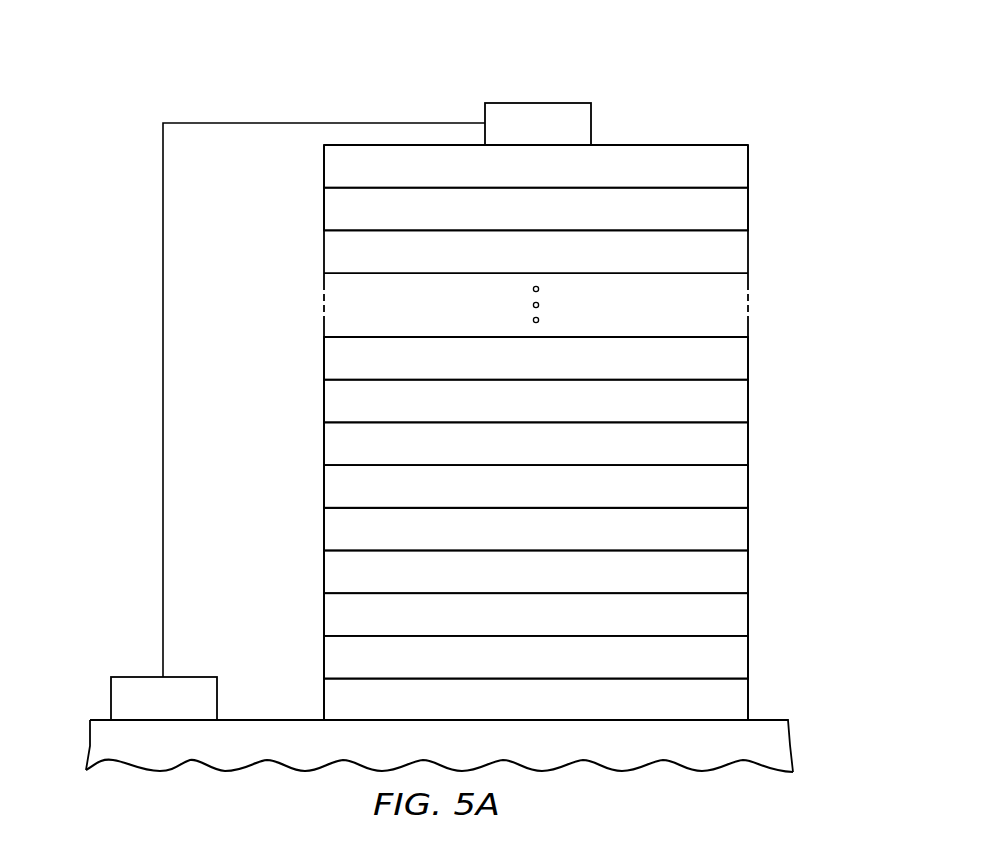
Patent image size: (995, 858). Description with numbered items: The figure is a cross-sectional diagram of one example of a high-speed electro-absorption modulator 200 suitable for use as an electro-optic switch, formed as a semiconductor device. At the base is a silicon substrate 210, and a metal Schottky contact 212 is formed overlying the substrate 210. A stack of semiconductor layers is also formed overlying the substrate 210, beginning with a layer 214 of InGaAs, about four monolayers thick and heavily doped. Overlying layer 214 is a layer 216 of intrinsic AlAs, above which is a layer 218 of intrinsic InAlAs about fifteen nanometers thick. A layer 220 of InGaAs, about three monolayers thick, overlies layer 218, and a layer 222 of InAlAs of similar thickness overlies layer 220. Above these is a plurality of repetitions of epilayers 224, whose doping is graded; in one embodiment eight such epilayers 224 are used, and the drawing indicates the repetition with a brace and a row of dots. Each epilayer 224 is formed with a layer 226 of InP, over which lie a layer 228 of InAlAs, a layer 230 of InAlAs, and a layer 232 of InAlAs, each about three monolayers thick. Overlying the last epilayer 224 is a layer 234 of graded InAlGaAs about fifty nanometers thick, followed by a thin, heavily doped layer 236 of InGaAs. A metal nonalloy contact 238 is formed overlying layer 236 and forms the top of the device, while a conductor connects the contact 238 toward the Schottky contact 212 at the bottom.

The modulator 200 is at (692, 110).
The silicon substrate 210 is at (790, 748).
The metal Schottky contact 212 is at (111, 698).
The layer of InGaAs 214 is at (749, 702).
The layer of intrinsic AlAs 216 is at (749, 659).
The layer of intrinsic InAlAs 218 is at (749, 616).
The layer of InGaAs 220 is at (749, 573).
The layer of InAlAs 222 is at (749, 531).
The epilayer 224 is at (749, 253).
The layer of InP 226 is at (749, 488).
The layer of InAlAs 228 is at (749, 445).
The layer of InAlAs 230 is at (749, 403).
The layer of InAlAs 232 is at (749, 360).
The layer of In0.53AlxGa(0.47-x)As 234 is at (749, 211).
The layer of InGaAs 236 is at (749, 168).
The metal nonalloy contact 238 is at (540, 103).